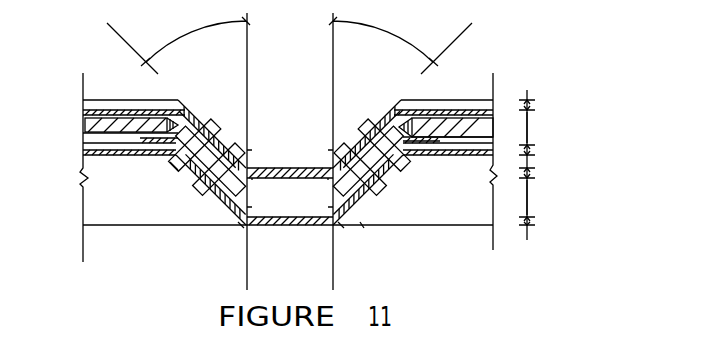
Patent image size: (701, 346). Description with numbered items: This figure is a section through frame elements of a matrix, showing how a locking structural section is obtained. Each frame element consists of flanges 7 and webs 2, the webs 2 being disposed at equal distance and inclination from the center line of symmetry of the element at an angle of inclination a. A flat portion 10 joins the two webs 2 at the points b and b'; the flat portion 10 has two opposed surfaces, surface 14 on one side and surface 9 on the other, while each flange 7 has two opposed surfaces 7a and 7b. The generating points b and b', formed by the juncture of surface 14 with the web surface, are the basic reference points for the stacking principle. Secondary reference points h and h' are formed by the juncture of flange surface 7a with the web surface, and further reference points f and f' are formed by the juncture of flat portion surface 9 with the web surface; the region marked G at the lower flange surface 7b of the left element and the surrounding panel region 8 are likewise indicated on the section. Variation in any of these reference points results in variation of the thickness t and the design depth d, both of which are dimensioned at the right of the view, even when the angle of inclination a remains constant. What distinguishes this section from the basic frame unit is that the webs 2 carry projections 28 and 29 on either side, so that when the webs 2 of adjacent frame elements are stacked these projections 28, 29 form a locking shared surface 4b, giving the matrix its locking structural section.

The webs 2 is at (178, 107).
The locking shared surface 4b is at (229, 129).
The flanges 7 is at (148, 110).
The flange surface 7a is at (147, 100).
The flange surface 7b is at (173, 157).
The sandwich panel 8 is at (107, 128).
The flat portion surface 9 is at (253, 225).
The flat portion 10 is at (283, 218).
The flat portion surface 14 is at (300, 212).
The projection 28 is at (227, 104).
The projection 29 is at (207, 100).
The angle of inclination a is at (289, 40).
The generating point b is at (255, 176).
The generating point b' is at (320, 175).
The design depth d is at (542, 163).
The reference point f is at (226, 255).
The reference point f' is at (358, 253).
The joint region G is at (173, 165).
The secondary reference point h is at (206, 140).
The secondary reference point h' is at (375, 137).
The thickness t is at (536, 225).